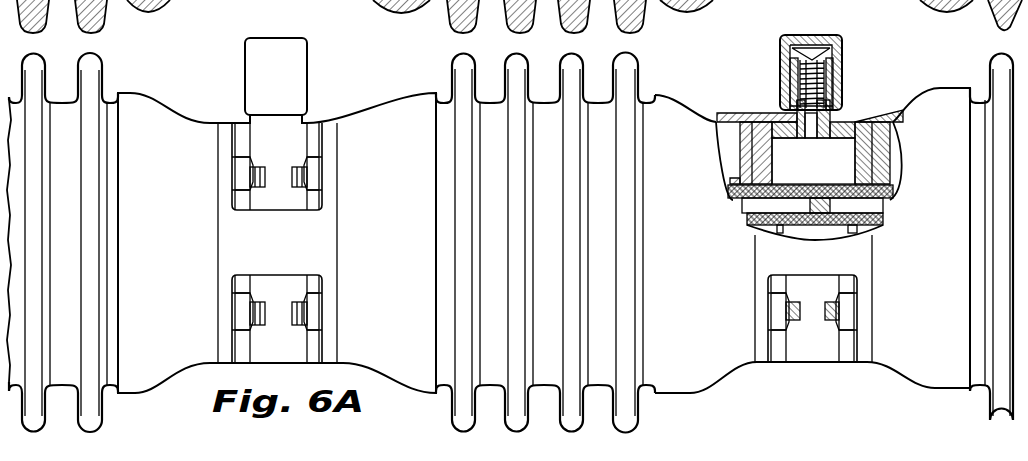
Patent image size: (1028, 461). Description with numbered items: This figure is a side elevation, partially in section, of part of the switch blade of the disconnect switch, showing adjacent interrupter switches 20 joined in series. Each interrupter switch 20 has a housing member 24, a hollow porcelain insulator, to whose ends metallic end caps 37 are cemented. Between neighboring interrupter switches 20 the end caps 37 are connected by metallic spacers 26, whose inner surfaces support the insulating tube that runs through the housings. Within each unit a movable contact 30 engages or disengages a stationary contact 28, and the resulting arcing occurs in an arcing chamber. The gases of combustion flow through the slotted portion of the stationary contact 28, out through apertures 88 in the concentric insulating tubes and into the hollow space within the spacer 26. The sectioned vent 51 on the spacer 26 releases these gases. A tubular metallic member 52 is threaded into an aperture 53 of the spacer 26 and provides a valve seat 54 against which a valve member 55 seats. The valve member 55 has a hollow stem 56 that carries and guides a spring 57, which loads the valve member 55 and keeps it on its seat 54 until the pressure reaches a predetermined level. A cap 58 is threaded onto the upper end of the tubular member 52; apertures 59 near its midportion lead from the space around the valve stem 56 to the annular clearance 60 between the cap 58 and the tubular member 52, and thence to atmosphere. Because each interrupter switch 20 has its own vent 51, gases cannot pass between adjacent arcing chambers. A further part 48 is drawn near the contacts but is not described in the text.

The flexible bellows conduit 20 is at (510, 234).
The convolution 24 is at (90, 95).
The rigid body section 37 is at (173, 122).
The valve assembly 51 is at (562, 69).
The fastener bracket assembly 26 is at (320, 232).
The valve cap 58 is at (787, 37).
The spring retainer 57 is at (837, 50).
The spring 56 is at (843, 67).
The spring seat 59 is at (840, 82).
The valve stem 60 is at (798, 80).
The stem guide 54 is at (793, 100).
The stem bore 53 is at (797, 120).
The valve housing 52 is at (840, 120).
The valve chamber 55 is at (813, 127).
The diaphragm 88 is at (813, 190).
The plate 28 is at (873, 207).
The gasket 30 is at (883, 217).
The retaining ring 48 is at (837, 238).